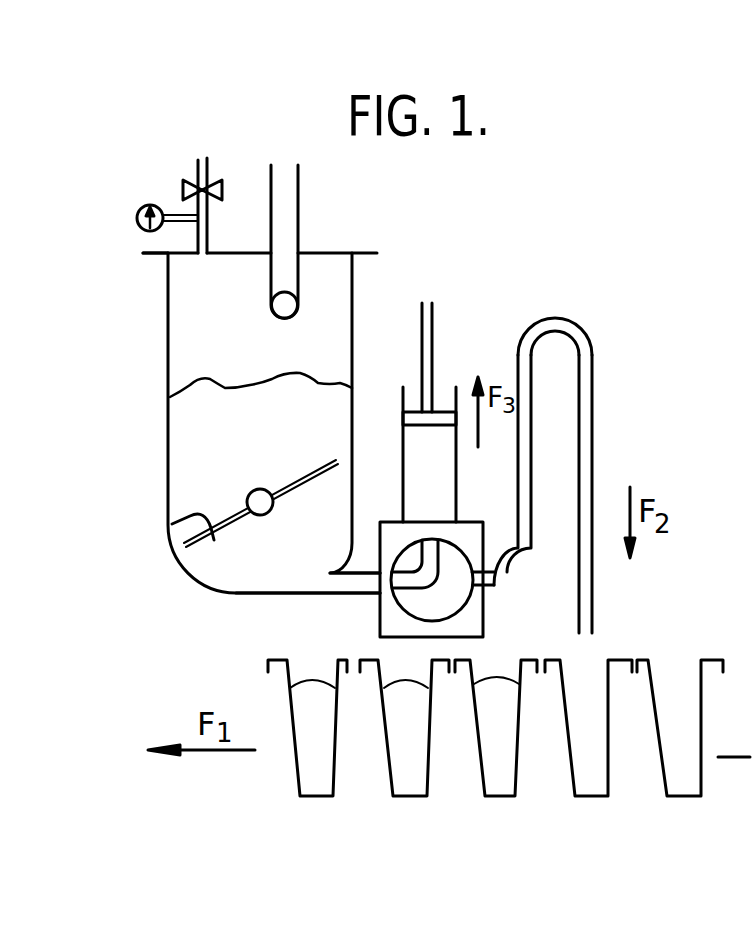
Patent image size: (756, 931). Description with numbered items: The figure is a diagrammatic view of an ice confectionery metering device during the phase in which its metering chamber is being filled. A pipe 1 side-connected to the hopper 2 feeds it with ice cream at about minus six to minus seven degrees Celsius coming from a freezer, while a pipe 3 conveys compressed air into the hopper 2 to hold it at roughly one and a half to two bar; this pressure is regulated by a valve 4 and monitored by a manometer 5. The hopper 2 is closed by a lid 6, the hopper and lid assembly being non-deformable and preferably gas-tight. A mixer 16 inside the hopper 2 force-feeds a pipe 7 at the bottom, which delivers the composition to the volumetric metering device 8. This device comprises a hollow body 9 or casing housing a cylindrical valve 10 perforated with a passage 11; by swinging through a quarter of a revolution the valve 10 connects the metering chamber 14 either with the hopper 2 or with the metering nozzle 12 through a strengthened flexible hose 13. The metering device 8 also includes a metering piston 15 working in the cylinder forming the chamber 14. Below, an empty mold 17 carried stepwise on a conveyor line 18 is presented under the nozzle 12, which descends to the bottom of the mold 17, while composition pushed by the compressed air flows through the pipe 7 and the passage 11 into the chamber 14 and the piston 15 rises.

The pipe 1 is at (285, 283).
The hopper 2 is at (170, 343).
The pipe 3 is at (199, 158).
The valve 4 is at (185, 190).
The manometer 5 is at (148, 206).
The lid 6 is at (164, 253).
The pipe 7 is at (345, 583).
The volumetric metering device 8 is at (470, 268).
The hollow body 9 is at (380, 612).
The cylindrical valve 10 is at (448, 594).
The passage 11 is at (414, 585).
The metering nozzle 12 is at (588, 470).
The strengthened flexible hose 13 is at (552, 318).
The metering chamber 14 is at (417, 462).
The metering piston 15 is at (434, 337).
The mixer 16 is at (172, 524).
The mold 17 is at (612, 660).
The conveyor line 18 is at (734, 740).